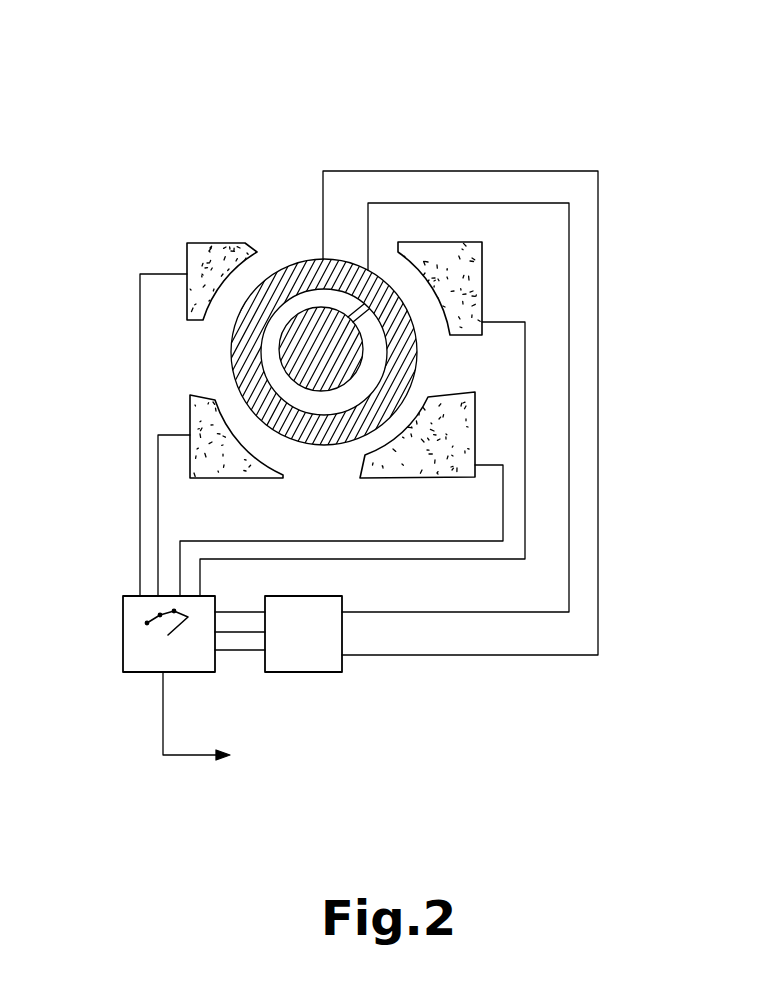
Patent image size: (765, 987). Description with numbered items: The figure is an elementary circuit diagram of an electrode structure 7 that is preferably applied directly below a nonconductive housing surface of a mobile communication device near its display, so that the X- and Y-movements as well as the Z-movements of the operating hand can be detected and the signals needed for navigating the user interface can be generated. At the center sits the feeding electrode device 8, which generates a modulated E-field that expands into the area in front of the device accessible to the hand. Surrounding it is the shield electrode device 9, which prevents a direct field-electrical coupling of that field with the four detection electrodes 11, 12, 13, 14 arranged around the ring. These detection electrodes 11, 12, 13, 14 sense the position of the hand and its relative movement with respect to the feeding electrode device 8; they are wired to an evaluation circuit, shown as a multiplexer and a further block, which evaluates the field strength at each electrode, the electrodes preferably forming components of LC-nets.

The electrode structure 7 is at (216, 142).
The feeding electrode device 8 is at (310, 322).
The shield electrode device 9 is at (232, 350).
The detection electrode 11 is at (207, 246).
The detection electrode 12 is at (452, 248).
The detection electrode 13 is at (470, 421).
The detection electrode 14 is at (208, 456).